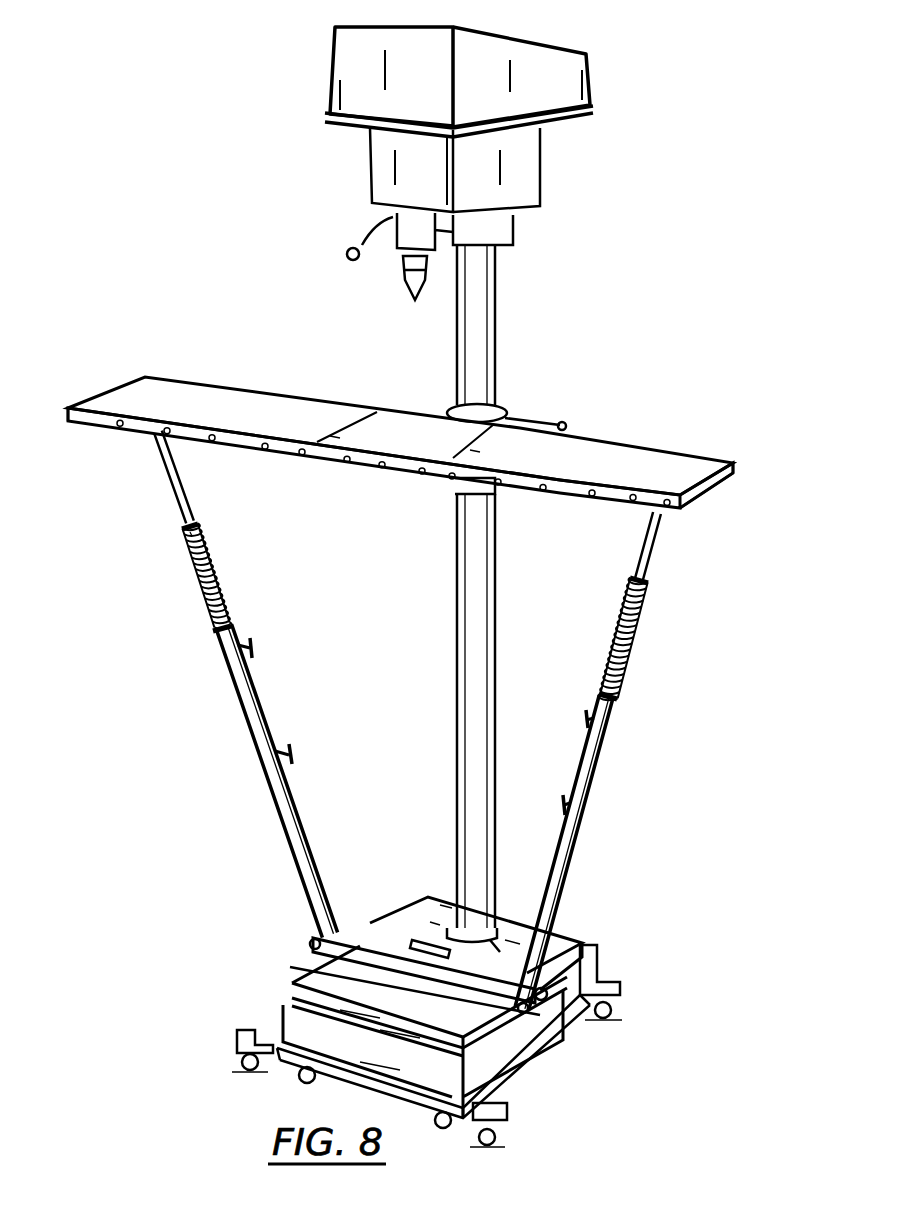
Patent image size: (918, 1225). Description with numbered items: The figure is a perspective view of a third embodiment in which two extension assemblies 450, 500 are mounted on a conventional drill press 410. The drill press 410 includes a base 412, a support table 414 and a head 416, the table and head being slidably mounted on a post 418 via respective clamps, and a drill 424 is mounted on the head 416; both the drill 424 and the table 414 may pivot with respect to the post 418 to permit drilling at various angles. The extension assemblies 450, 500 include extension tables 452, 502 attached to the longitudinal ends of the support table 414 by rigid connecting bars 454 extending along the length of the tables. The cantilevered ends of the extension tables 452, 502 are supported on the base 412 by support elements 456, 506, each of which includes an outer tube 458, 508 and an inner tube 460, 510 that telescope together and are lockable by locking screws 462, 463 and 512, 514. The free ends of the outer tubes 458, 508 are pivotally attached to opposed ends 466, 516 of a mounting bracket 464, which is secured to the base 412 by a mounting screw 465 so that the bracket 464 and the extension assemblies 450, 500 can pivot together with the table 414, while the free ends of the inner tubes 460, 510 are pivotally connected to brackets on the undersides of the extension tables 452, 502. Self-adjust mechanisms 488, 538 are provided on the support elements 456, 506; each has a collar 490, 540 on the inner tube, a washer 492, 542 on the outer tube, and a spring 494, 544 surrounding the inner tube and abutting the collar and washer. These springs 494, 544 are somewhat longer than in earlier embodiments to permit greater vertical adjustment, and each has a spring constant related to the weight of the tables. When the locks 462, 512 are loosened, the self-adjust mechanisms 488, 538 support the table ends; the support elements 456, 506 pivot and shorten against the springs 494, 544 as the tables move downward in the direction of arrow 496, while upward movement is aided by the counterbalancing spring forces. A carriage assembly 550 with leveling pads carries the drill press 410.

The drill press 410 is at (578, 271).
The base 412 is at (560, 940).
The support table 414 is at (400, 437).
The head 416 is at (540, 225).
The post 418 is at (500, 325).
The drill 424 is at (390, 260).
The extension assembly 450 is at (758, 440).
The extension table 452 is at (735, 470).
The rigid connecting bars 454 is at (95, 425).
The support element 456 is at (614, 775).
The outer tube 458 is at (588, 830).
The inner tube 460 is at (660, 542).
The locking screw 462 is at (560, 705).
The locking screw 463 is at (545, 782).
The mounting bracket 464 is at (280, 965).
The mounting screw 465 is at (400, 883).
The end of mounting bracket 466 is at (545, 1000).
The self-adjust mechanism 488 is at (662, 645).
The collar 490 is at (650, 580).
The washer 492 is at (620, 697).
The spring 494 is at (652, 612).
The arrow 496 is at (424, 597).
The extension assembly 500 is at (145, 703).
The extension table 502 is at (110, 398).
The support element 506 is at (213, 737).
The outer tube 508 is at (238, 820).
The inner tube 510 is at (122, 490).
The locking screw 512 is at (253, 640).
The locking screw 514 is at (294, 755).
The end of mounting bracket 516 is at (268, 940).
The self-adjust mechanism 538 is at (152, 598).
The collar 540 is at (140, 518).
The washer 542 is at (182, 632).
The spring 544 is at (155, 548).
The carriage assembly 550 is at (624, 970).